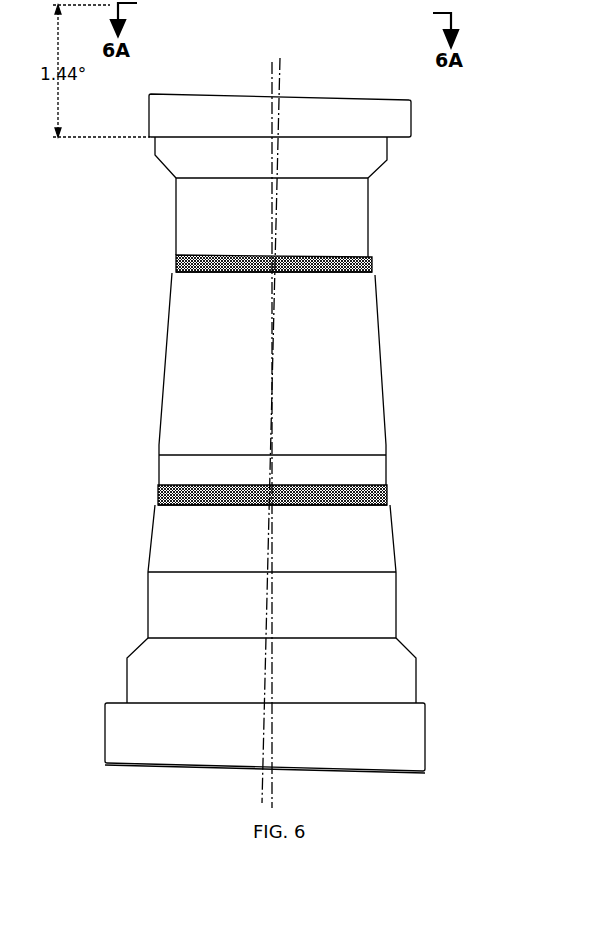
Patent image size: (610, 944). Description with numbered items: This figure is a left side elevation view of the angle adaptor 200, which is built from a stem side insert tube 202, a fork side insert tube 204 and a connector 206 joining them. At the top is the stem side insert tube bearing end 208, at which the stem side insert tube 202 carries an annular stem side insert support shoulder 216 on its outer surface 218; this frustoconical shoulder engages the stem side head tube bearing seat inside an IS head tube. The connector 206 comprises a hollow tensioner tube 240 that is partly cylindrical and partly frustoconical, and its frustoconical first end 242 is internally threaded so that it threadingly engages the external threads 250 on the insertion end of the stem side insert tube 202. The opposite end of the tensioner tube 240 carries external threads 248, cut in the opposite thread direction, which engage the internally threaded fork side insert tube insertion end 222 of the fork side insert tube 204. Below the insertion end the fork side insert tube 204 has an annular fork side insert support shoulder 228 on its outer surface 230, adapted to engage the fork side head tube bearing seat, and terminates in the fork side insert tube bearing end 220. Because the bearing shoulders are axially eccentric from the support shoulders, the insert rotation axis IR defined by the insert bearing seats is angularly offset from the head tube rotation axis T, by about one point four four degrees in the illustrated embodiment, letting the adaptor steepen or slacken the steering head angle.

The angle adaptor 200 is at (251, 437).
The stem side insert tube 202 is at (178, 217).
The fork side insert tube 204 is at (148, 605).
The connector 206 is at (158, 442).
The stem side insert tube bearing end 208 is at (197, 97).
The stem side insert support shoulder 216 is at (165, 173).
The outer surface 218 is at (251, 238).
The fork side insert tube bearing end 220 is at (128, 766).
The fork side insert tube insertion end 222 is at (157, 501).
The fork side insert support shoulder 228 is at (405, 646).
The outer surface 230 is at (224, 687).
The tensioner tube 240 is at (162, 352).
The first end 242 is at (176, 267).
The threads 248 is at (387, 495).
The threads 250 is at (372, 265).
The head tube rotation axis T is at (270, 74).
The insert rotation axis IR is at (283, 82).